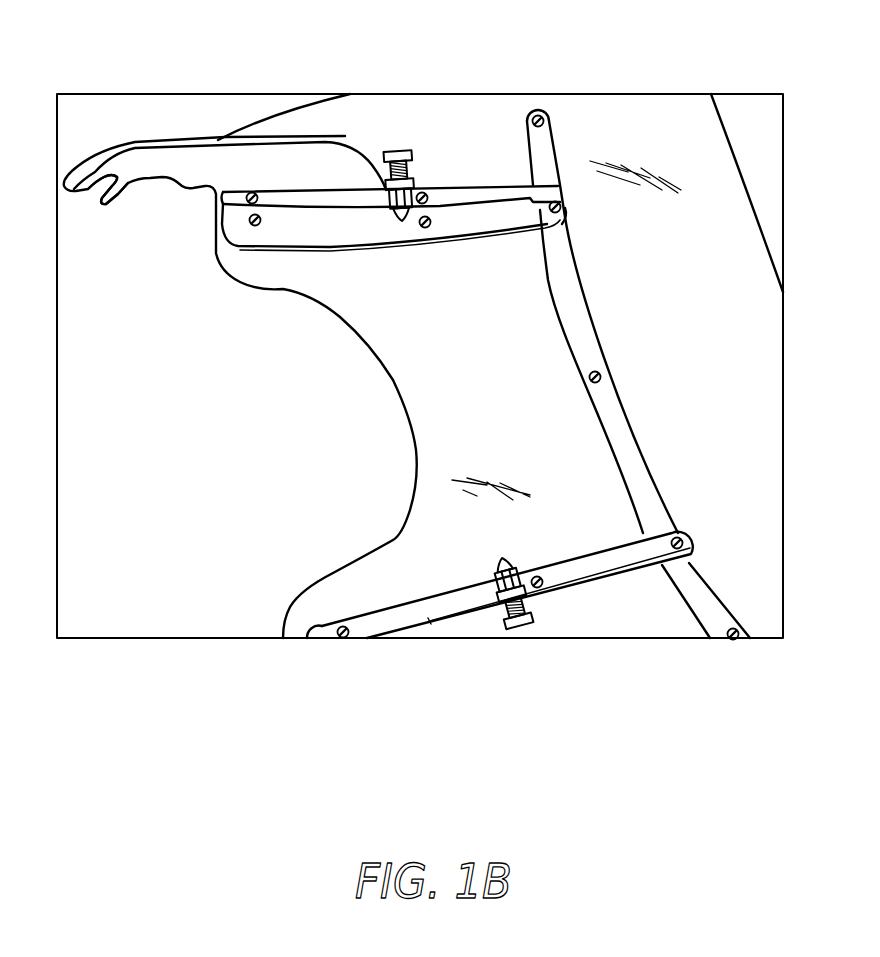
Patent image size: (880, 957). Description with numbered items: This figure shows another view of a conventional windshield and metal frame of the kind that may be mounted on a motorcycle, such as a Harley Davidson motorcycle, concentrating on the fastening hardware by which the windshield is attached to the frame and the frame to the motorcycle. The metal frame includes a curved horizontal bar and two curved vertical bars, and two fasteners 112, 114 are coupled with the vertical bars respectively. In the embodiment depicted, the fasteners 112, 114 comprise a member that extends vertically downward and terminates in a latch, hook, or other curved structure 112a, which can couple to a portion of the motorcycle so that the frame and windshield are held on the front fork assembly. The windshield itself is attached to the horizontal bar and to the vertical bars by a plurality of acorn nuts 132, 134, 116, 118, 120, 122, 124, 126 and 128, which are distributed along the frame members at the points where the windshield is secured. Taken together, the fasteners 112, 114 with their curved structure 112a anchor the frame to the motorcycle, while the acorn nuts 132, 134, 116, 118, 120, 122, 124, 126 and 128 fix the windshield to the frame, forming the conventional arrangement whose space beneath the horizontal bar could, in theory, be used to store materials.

The fastener 112 is at (283, 142).
The curved structure 112a is at (113, 157).
The fastener 114 is at (430, 623).
The acorn nut 116 is at (603, 380).
The acorn nut 118 is at (697, 552).
The acorn nut 120 is at (732, 638).
The acorn nut 122 is at (427, 217).
The acorn nut 124 is at (543, 585).
The acorn nut 126 is at (247, 220).
The acorn nut 128 is at (340, 630).
The acorn nut 132 is at (538, 118).
The acorn nut 134 is at (560, 212).